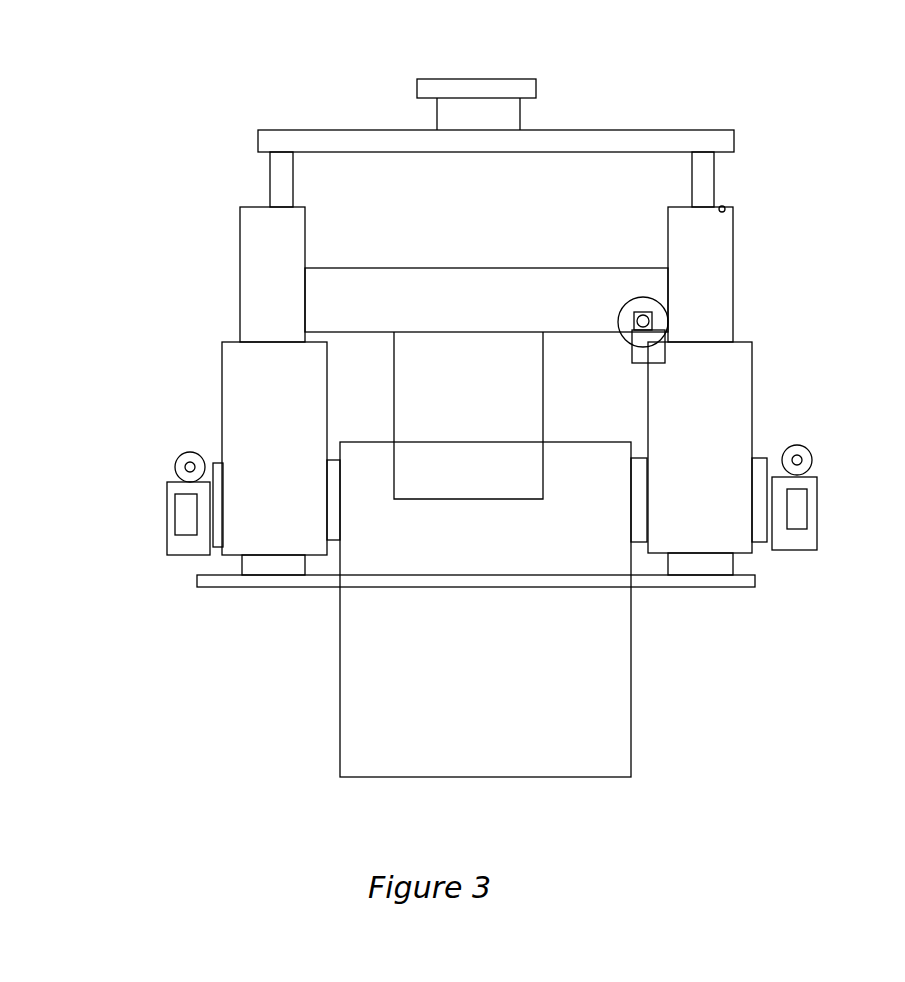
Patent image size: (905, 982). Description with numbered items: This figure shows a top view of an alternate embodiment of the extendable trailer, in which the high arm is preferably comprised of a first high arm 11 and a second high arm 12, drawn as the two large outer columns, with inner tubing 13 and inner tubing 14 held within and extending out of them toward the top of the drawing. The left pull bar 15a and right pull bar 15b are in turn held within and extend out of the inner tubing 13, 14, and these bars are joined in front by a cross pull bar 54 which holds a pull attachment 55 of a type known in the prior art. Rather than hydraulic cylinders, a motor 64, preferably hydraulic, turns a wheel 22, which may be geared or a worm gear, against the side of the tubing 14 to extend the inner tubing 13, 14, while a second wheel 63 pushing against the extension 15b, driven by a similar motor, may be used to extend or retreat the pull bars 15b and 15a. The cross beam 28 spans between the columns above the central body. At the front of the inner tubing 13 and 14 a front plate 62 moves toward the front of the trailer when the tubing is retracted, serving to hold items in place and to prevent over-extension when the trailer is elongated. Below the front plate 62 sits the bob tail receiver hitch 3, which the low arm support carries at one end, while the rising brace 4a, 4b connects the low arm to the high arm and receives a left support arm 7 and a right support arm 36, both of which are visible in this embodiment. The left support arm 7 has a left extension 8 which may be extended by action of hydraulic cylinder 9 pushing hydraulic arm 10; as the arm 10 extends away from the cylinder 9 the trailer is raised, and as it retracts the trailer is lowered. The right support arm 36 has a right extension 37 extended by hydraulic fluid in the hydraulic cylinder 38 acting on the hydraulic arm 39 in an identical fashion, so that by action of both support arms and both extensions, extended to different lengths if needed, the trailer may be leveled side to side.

The bob tail receiver hitch 3 is at (468, 699).
The rising brace 4a is at (218, 548).
The rising brace 4b is at (642, 545).
The left support arm 7 is at (165, 497).
The left extension 8 is at (178, 538).
The hydraulic cylinder 9 is at (184, 456).
The hydraulic arm 10 is at (186, 467).
The first high arm 11 is at (222, 371).
The second high arm 12 is at (752, 374).
The inner tubing 13 is at (240, 268).
The inner tubing 14 is at (734, 252).
The left pull bar 15a is at (272, 186).
The right pull bar 15b is at (713, 176).
The wheel 22 is at (666, 308).
The cross beam 28 is at (486, 383).
The right support arm 36 is at (818, 492).
The right extension 37 is at (808, 515).
The hydraulic cylinder 38 is at (802, 448).
The hydraulic arm 39 is at (805, 460).
The cross pull bar 54 is at (582, 140).
The pull attachment 55 is at (487, 83).
The front plate 62 is at (718, 588).
The wheel 63 is at (725, 206).
The motor 64 is at (637, 350).